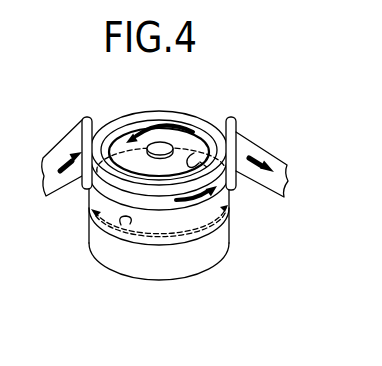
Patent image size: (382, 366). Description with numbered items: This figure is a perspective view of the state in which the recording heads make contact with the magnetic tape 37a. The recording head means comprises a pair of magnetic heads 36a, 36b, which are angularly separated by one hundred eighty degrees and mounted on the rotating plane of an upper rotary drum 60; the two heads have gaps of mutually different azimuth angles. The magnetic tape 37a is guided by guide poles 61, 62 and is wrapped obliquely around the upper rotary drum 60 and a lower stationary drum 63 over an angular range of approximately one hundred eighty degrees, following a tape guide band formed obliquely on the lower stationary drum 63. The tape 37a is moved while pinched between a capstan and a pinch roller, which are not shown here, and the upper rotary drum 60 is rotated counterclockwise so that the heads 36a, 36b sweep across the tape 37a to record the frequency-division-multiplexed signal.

The upper rotary drum 60 is at (143, 115).
The lower stationary drum 63 is at (183, 268).
The guide pole 61 is at (87, 121).
The guide pole 62 is at (234, 122).
The magnetic head 36a is at (193, 154).
The magnetic head 36b is at (121, 226).
The magnetic tape 37a is at (281, 142).